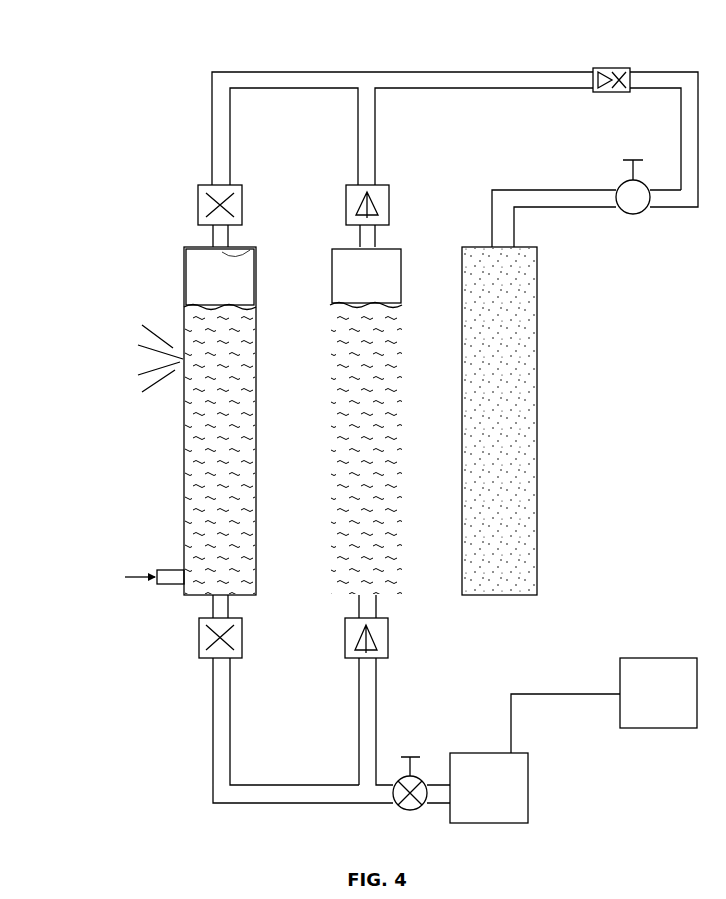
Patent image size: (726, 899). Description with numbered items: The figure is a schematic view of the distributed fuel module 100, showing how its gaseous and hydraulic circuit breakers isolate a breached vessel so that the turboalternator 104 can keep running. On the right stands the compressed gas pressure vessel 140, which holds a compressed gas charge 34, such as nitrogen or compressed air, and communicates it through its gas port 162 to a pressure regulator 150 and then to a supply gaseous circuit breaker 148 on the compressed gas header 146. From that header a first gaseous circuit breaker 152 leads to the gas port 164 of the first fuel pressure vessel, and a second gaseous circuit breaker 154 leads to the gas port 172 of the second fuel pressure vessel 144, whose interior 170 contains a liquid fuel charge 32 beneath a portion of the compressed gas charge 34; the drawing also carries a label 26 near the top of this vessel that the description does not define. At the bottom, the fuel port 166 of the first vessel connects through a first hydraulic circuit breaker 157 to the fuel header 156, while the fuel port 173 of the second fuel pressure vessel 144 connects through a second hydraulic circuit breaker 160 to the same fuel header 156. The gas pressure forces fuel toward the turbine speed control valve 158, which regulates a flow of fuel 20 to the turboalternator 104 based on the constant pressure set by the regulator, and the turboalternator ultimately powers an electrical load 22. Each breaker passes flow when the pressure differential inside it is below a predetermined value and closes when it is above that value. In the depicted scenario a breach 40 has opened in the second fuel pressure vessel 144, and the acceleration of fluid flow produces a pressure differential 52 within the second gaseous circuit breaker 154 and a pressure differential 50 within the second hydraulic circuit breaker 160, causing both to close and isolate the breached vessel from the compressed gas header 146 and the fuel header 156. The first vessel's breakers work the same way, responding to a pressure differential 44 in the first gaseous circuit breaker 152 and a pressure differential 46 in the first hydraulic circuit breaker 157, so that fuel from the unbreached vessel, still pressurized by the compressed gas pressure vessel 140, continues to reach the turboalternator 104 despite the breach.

The flow of fuel 20 is at (444, 785).
The electrical load 22 is at (650, 656).
The first vessel 26 is at (246, 268).
The liquid fuel charge 32 is at (405, 267).
The compressed gas charge 34 is at (198, 518).
The breach 40 is at (162, 322).
The pressure differential 44 is at (376, 621).
The pressure differential 46 is at (390, 229).
The pressure differential 50 is at (242, 622).
The pressure differential 52 is at (198, 218).
The distributed fuel module 100 is at (165, 684).
The turboalternator 104 is at (463, 752).
The compressed gas pressure vessel 140 is at (537, 400).
The second fuel pressure vessel 144 is at (183, 390).
The compressed gas header 146 is at (456, 78).
The supply gaseous circuit breaker 148 is at (611, 68).
The pressure regulator 150 is at (632, 215).
The first gaseous circuit breaker 152 is at (390, 197).
The second gaseous circuit breaker 154 is at (242, 201).
The fuel header 156 is at (318, 793).
The first hydraulic circuit breaker 157 is at (389, 637).
The turbine speed control valve 158 is at (412, 812).
The second hydraulic circuit breaker 160 is at (246, 638).
The gas port 162 is at (500, 250).
The gas port 164 is at (362, 249).
The fuel port 166 is at (370, 586).
The interior 170 is at (158, 405).
The gas port 172 is at (222, 252).
The fuel port 173 is at (211, 588).